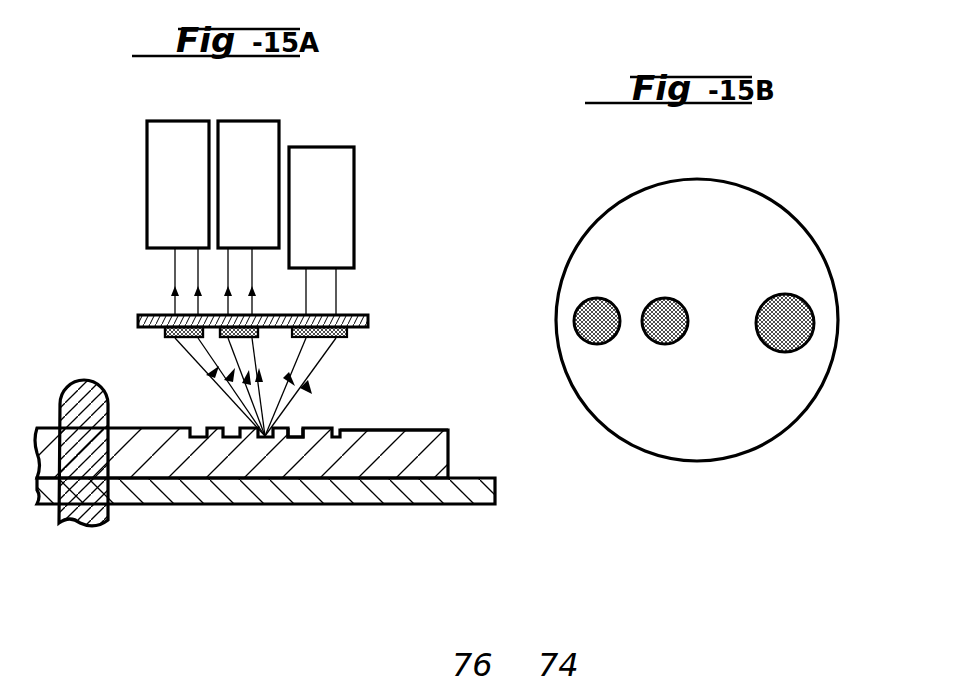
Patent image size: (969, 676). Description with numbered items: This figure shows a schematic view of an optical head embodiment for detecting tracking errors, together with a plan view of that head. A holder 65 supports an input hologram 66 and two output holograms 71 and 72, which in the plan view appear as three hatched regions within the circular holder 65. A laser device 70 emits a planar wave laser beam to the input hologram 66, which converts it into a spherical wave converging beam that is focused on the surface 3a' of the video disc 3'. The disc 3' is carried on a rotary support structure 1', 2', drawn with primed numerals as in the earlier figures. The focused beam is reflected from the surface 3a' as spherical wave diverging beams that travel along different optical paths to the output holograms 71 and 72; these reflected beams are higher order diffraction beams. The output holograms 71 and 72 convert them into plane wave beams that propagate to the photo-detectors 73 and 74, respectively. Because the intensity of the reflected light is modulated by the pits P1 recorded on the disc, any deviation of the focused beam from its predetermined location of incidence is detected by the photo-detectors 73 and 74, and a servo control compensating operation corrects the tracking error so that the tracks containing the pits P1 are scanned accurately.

In FIG. 15A, the photo-detector 73 is at (176, 120).
In FIG. 15A, the photo-detector 74 is at (252, 120).
In FIG. 15A, the laser device 70 is at (332, 146).
In FIG. 15A, the holder 65 is at (366, 320).
In FIG. 15B, the holder 65 is at (764, 208).
In FIG. 15A, the input hologram 66 is at (350, 337).
In FIG. 15B, the input hologram 66 is at (798, 296).
In FIG. 15A, the output hologram 71 is at (175, 338).
In FIG. 15B, the output hologram 71 is at (582, 298).
In FIG. 15A, the output hologram 72 is at (258, 327).
In FIG. 15B, the output hologram 72 is at (660, 345).
In FIG. 15A, the rotary support structure 1' is at (84, 421).
In FIG. 15A, the disc 3' is at (256, 431).
In FIG. 15A, the surface 3a' is at (394, 408).
In FIG. 15A, the pits P1 is at (316, 428).
In FIG. 15A, the rotary support structure 2' is at (276, 466).